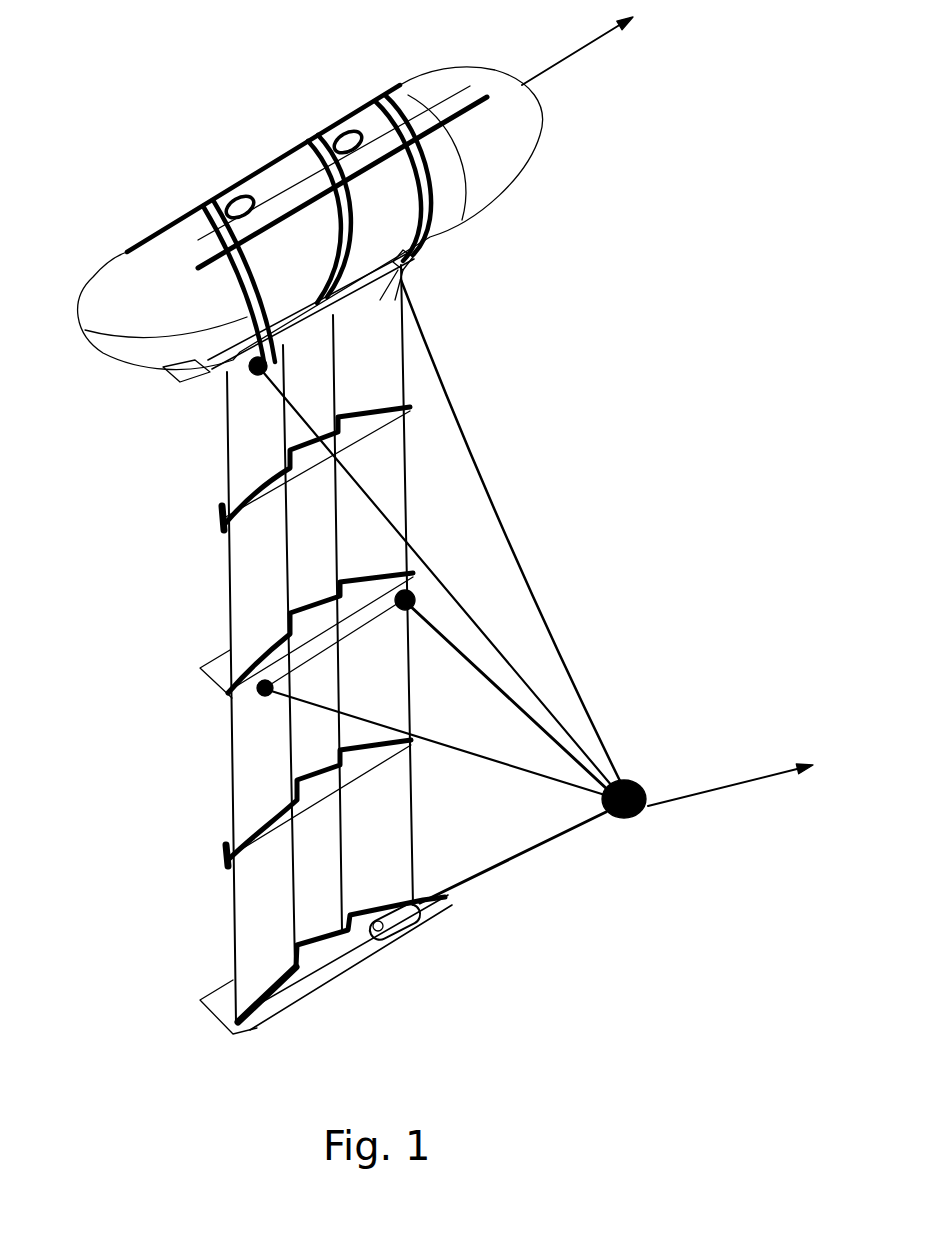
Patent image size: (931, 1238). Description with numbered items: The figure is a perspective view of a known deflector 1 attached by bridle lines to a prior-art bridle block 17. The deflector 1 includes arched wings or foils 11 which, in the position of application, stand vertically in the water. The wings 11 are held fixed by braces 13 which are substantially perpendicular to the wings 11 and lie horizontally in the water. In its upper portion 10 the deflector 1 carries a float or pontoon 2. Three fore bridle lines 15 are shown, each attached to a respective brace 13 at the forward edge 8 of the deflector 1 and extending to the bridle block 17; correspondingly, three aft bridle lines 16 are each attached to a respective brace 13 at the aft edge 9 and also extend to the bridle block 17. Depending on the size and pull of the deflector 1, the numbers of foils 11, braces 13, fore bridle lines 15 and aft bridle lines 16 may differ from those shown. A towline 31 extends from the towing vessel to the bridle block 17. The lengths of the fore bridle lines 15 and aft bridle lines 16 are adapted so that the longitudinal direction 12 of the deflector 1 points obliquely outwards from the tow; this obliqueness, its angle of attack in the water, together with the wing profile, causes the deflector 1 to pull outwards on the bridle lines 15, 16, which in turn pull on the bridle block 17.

The deflector 1 is at (198, 180).
The float or pontoon 2 is at (510, 135).
The forward edge 8 is at (407, 528).
The aft edge 9 is at (232, 714).
The upper portion 10 is at (413, 263).
The arched wings or foils 11 is at (240, 617).
The longitudinal direction 12 is at (523, 85).
The braces 13 is at (197, 371).
The fore bridle lines 15 is at (473, 458).
The aft bridle lines 16 is at (260, 422).
The bridle block 17 is at (650, 798).
The towline 31 is at (678, 802).